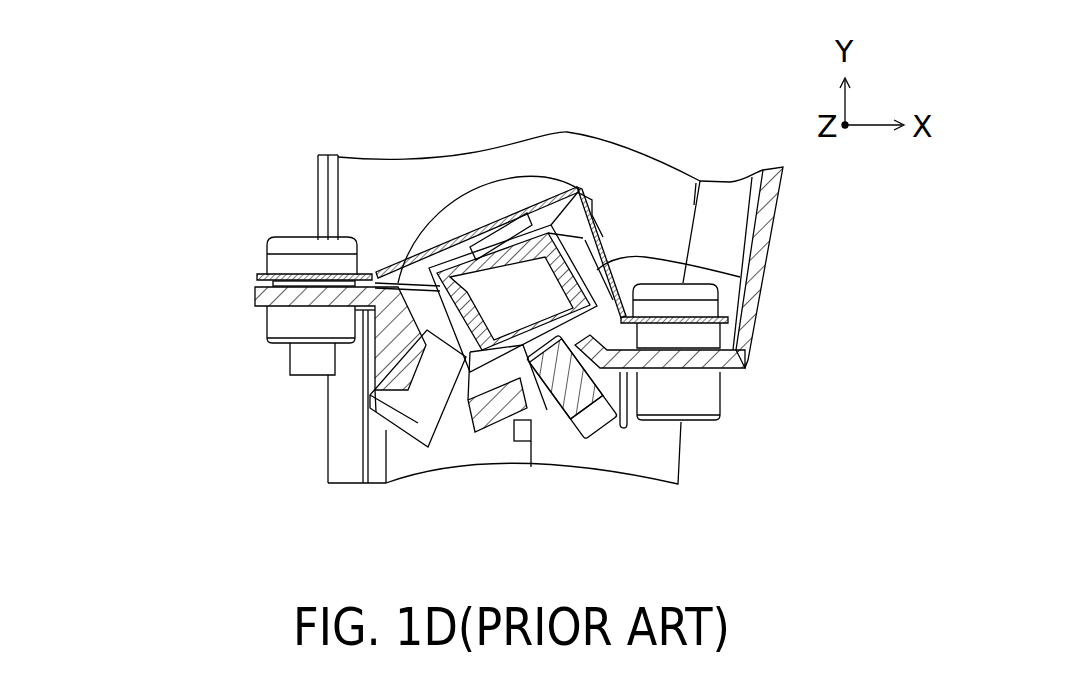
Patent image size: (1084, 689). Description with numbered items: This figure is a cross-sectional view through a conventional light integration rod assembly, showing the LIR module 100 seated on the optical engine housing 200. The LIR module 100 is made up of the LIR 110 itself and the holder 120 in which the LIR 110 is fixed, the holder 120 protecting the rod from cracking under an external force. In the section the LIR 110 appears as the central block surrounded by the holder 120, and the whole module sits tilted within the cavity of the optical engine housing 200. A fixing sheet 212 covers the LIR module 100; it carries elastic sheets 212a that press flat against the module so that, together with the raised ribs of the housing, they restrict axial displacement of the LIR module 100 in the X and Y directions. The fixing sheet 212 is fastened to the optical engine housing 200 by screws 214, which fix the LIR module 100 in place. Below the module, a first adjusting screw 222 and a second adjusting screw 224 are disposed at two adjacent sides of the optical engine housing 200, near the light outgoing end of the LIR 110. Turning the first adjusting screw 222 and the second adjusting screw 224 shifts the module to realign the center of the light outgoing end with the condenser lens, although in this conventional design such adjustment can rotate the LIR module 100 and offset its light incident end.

The LIR module 100 is at (549, 187).
The LIR 110 is at (597, 270).
The holder 120 is at (545, 235).
The optical engine housing 200 is at (257, 298).
The fixing sheet 212 is at (393, 272).
The elastic sheet 212a is at (492, 225).
The screw 214 is at (302, 250).
The first adjusting screw 222 is at (405, 418).
The second adjusting screw 224 is at (568, 413).